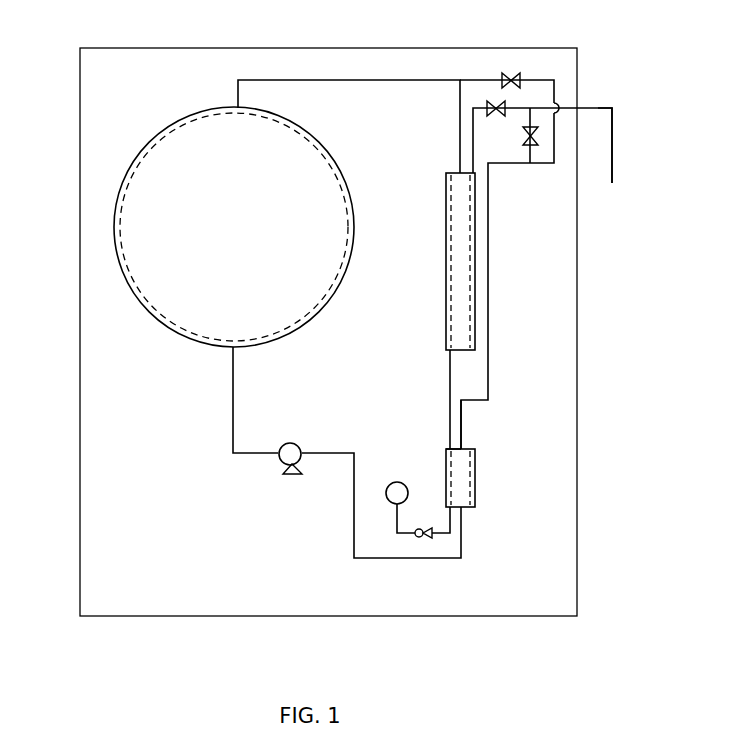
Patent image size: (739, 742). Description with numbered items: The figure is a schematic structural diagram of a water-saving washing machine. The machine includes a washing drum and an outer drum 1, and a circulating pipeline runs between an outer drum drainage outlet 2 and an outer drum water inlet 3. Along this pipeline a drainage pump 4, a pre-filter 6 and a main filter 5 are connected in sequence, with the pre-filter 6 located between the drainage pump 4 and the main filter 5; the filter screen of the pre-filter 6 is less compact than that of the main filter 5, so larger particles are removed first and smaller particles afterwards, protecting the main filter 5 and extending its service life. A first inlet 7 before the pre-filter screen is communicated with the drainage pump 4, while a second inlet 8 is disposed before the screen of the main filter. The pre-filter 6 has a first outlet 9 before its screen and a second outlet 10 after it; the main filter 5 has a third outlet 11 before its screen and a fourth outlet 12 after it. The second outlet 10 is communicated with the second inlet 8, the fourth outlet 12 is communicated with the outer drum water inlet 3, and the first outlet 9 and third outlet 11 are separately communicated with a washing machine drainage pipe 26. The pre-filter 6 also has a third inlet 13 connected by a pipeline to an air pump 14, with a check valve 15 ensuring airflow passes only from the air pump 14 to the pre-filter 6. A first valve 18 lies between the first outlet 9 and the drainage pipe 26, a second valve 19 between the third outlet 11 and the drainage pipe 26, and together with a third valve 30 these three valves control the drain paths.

The outer drum 1 is at (190, 227).
The outer drum drainage outlet 2 is at (187, 229).
The outer drum water inlet 3 is at (304, 89).
The drainage pump 4 is at (232, 553).
The main filter 5 is at (455, 177).
The pre-filter 6 is at (537, 450).
The first inlet 7 is at (381, 558).
The second inlet 8 is at (536, 353).
The first outlet 9 is at (544, 402).
The second outlet 10 is at (537, 386).
The third outlet 11 is at (404, 176).
The fourth outlet 12 is at (381, 177).
The third inlet 13 is at (398, 585).
The air pump 14 is at (315, 572).
The check valve 15 is at (366, 595).
The first valve 18 is at (480, 46).
The second valve 19 is at (447, 60).
The washing machine drainage pipe 26 is at (561, 94).
The third valve 30 is at (507, 75).